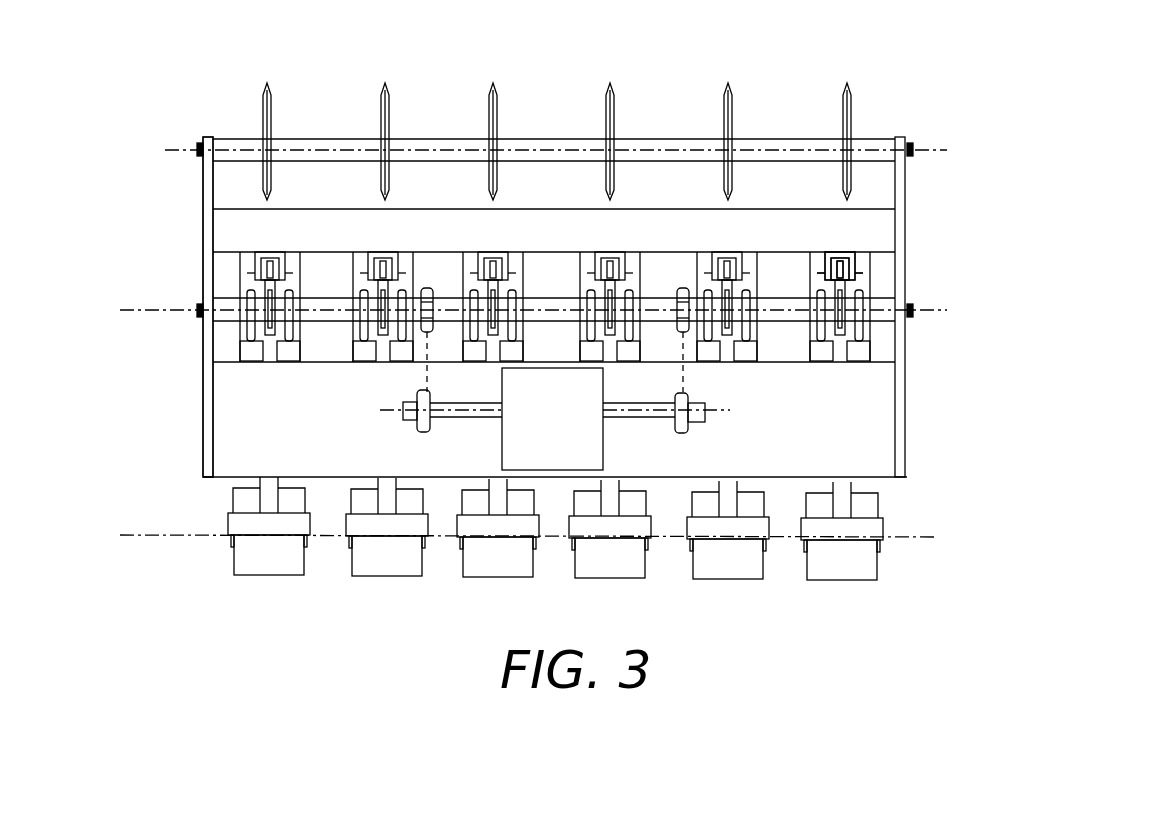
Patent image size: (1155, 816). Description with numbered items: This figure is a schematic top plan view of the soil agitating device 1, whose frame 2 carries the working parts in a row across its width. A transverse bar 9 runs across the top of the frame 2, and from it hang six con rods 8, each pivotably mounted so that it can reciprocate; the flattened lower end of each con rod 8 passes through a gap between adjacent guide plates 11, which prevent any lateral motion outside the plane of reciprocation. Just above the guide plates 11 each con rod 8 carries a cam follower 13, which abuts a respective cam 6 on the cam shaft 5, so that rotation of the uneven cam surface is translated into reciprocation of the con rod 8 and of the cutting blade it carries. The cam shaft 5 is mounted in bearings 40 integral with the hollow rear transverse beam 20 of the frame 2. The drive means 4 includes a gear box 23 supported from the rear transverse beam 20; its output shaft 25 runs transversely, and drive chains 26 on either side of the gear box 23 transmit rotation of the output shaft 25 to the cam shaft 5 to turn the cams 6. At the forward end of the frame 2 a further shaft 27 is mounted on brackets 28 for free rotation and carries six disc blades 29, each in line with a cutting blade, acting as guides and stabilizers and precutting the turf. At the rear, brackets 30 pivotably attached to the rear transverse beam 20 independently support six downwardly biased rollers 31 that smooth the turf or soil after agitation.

The agitating device 1 is at (976, 323).
The frame 2 is at (203, 362).
The drive means 4 is at (498, 431).
The cam shaft 5 is at (226, 297).
The cam 6 is at (273, 298).
The con rod 8 is at (613, 262).
The transverse bar 9 is at (418, 226).
The guide plates 11 is at (600, 268).
The cam follower 13 is at (266, 252).
The rear transverse beam 20 is at (240, 441).
The gear box 23 is at (590, 449).
The output shaft 25 is at (403, 413).
The drive chains 26 is at (423, 382).
The further shaft 27 is at (284, 142).
The brackets 28 is at (198, 148).
The disc blades 29 is at (722, 124).
The brackets 30 is at (250, 530).
The rollers 31 is at (385, 562).
The bearings 40 is at (270, 362).